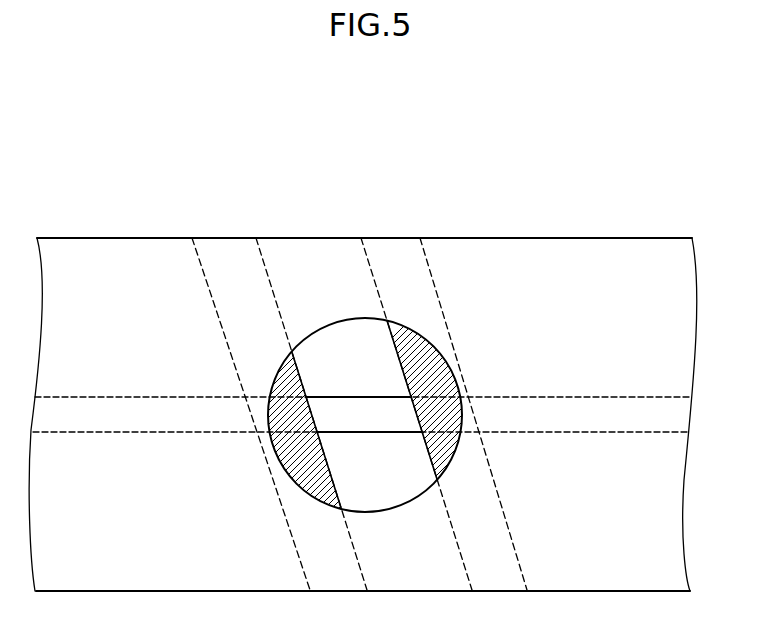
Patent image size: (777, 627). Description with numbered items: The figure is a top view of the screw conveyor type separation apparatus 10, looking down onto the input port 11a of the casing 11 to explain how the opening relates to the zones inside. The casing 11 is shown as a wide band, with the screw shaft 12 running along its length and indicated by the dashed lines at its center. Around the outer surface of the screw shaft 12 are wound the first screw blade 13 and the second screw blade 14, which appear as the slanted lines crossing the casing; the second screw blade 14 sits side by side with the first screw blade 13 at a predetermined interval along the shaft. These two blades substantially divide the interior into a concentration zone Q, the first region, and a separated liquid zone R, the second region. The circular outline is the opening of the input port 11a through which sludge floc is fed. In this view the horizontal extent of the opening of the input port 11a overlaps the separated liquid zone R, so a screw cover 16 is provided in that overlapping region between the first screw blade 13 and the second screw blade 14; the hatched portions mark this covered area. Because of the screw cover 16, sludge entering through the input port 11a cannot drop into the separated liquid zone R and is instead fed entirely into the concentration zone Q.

The screw conveyor type separation apparatus 10 is at (134, 168).
The casing 11 is at (505, 238).
The input port 11a is at (421, 336).
The screw shaft 12 is at (582, 396).
The first screw blade 13 is at (208, 285).
The second screw blade 14 is at (298, 373).
The screw cover 16 is at (281, 398).
The separated liquid zone R is at (245, 250).
The concentration zone Q is at (332, 343).